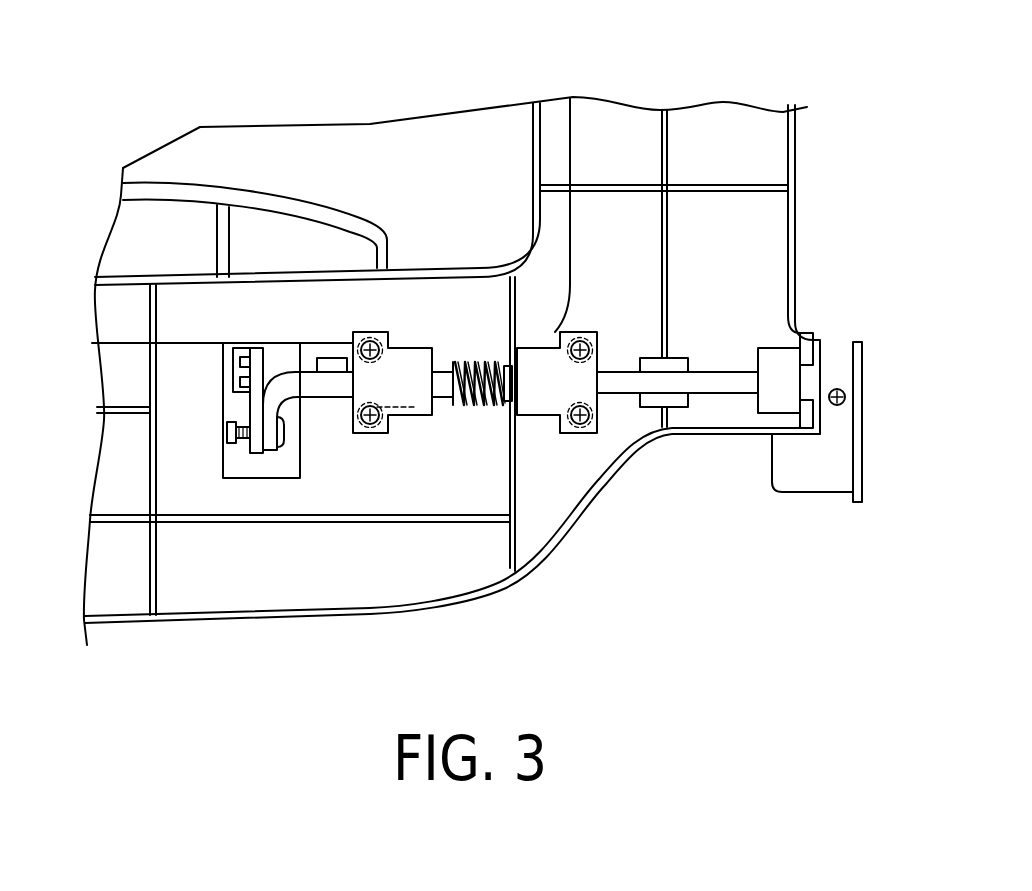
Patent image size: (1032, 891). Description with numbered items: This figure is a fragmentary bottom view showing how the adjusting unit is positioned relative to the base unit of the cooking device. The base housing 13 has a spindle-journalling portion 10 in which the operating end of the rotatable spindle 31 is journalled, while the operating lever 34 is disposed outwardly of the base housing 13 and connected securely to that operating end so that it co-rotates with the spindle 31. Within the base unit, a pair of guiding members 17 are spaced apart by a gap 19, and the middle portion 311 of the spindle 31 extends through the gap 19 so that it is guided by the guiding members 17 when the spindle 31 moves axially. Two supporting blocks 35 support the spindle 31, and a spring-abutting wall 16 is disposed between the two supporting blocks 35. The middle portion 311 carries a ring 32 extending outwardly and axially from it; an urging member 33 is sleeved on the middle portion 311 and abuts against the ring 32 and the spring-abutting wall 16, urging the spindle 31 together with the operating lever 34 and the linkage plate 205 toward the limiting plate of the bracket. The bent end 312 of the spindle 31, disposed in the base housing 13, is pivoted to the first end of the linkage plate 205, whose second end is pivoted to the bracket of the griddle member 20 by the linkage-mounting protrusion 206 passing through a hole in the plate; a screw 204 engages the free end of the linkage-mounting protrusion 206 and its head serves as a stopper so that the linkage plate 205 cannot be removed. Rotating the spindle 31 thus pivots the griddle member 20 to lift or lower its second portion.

The spindle-journalling portion 10 is at (821, 318).
The base housing 13 is at (394, 611).
The spring-abutting wall 16 is at (527, 513).
The guiding members 17 is at (655, 368).
The gap 19 is at (673, 363).
The griddle member 20 is at (293, 188).
The rotatable spindle 31 is at (723, 395).
The ring 32 is at (453, 397).
The urging member 33 is at (488, 415).
The operating lever 34 is at (862, 395).
The supporting blocks 35 is at (413, 360).
The screw 204 is at (283, 363).
The linkage plate 205 is at (247, 447).
The linkage-mounting protrusion 206 is at (258, 357).
The middle portion 311 is at (621, 393).
The bent end 312 is at (262, 413).